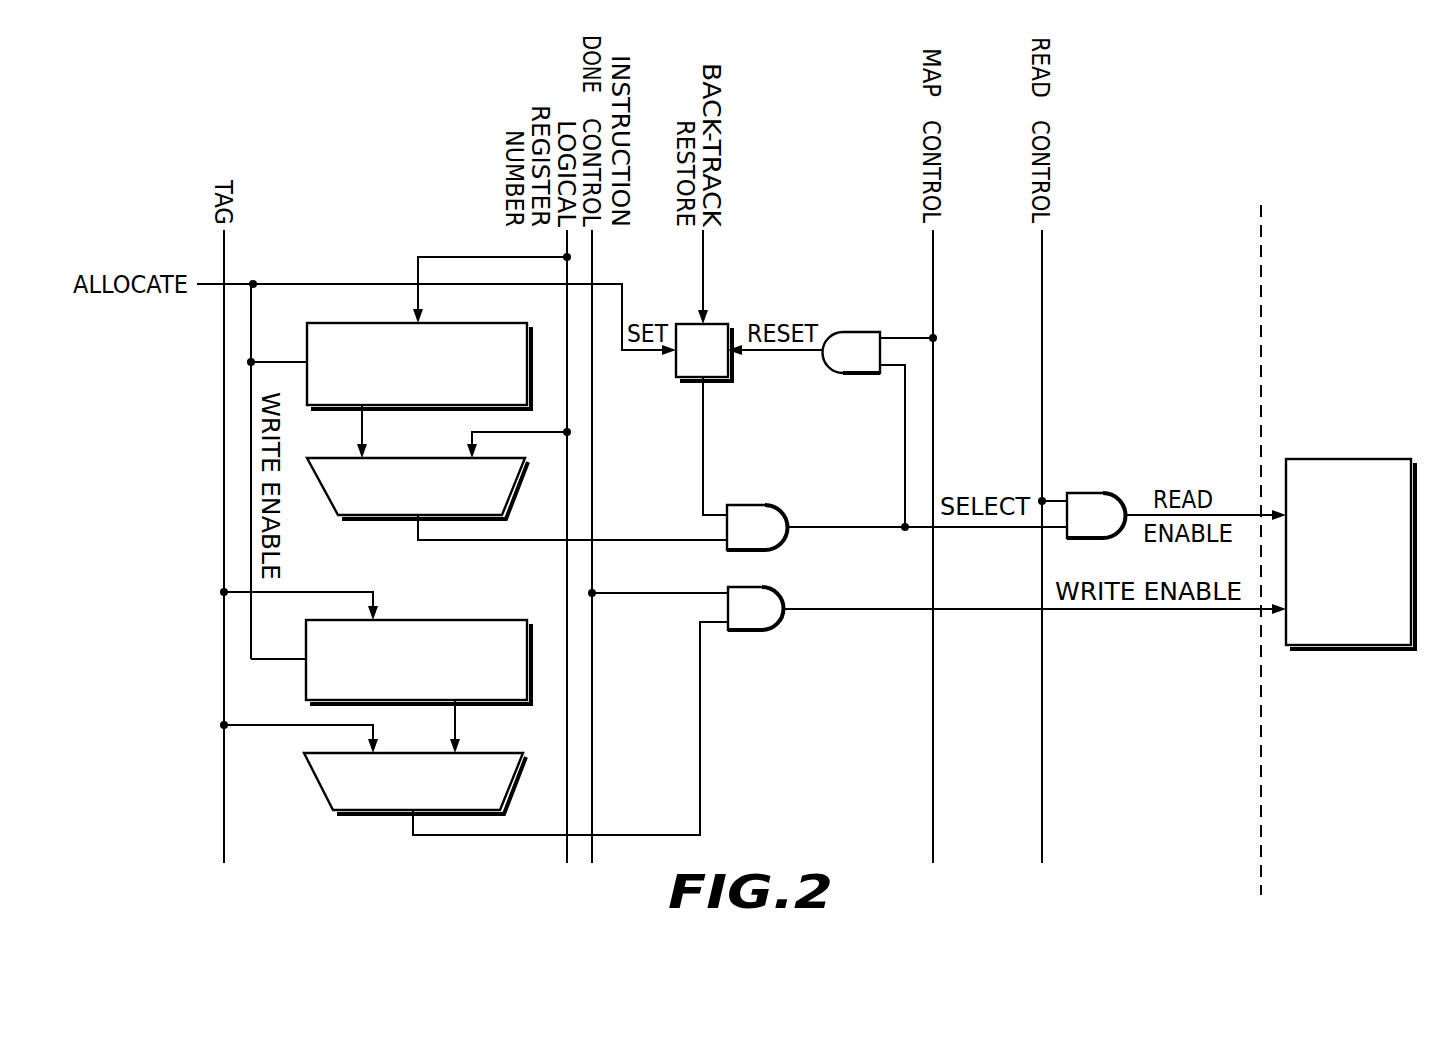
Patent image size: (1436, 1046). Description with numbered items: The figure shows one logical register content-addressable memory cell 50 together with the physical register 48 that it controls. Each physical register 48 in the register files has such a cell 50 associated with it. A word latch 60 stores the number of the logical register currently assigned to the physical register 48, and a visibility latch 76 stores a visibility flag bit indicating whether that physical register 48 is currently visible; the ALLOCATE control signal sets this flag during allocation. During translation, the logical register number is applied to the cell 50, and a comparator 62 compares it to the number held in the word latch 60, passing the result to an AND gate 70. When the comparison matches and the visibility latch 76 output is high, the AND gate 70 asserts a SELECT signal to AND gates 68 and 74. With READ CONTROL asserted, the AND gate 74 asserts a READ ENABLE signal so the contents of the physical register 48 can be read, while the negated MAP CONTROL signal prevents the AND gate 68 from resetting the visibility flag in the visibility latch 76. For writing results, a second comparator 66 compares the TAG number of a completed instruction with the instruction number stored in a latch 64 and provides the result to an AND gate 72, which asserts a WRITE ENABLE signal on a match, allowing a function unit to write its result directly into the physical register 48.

The physical register 48 is at (1343, 460).
The LR CAM cell 50 is at (1228, 166).
The word latch 60 is at (328, 322).
The comparator 62 is at (375, 517).
The instruction number latch 64 is at (467, 620).
The comparator 66 is at (318, 776).
The AND gate 68 is at (850, 332).
The AND gate 70 is at (755, 505).
The AND gate 72 is at (747, 632).
The AND gate 74 is at (1094, 493).
The visibility latch 76 is at (724, 324).